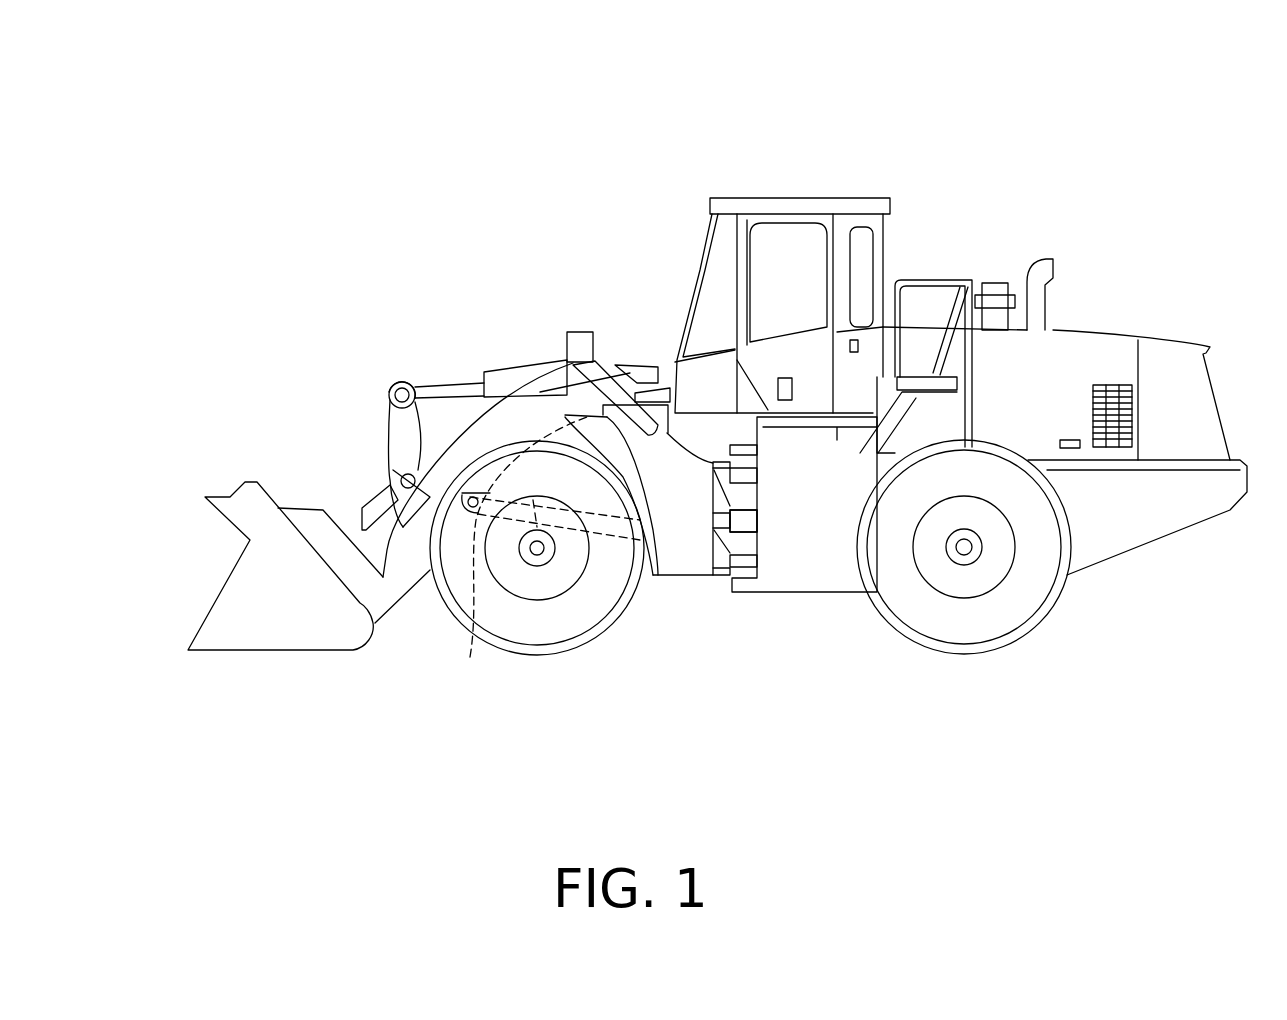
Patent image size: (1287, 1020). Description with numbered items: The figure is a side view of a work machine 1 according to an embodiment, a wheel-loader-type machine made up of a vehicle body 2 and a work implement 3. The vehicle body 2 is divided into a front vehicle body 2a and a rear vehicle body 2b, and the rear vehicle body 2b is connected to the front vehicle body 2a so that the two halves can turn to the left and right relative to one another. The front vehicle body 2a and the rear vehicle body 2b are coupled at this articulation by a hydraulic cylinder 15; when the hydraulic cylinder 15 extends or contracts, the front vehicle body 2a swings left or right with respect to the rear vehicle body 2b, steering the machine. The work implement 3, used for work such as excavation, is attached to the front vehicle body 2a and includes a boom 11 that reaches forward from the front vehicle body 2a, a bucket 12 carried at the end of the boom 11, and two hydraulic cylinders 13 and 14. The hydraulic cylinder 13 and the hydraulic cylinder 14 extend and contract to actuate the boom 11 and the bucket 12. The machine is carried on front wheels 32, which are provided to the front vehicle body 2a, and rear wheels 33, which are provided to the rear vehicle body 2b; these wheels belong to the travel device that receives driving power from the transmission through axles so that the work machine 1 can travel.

The work machine 1 is at (1028, 105).
The vehicle body 2 is at (790, 704).
The front vehicle body 2a is at (692, 572).
The rear vehicle body 2b is at (773, 592).
The work implement 3 is at (230, 466).
The boom 11 is at (442, 478).
The bucket 12 is at (243, 580).
The hydraulic cylinder 13 is at (480, 600).
The hydraulic cylinder 14 is at (497, 380).
The hydraulic cylinder 15 is at (747, 517).
The front wheels 32 is at (552, 633).
The rear wheels 33 is at (978, 633).